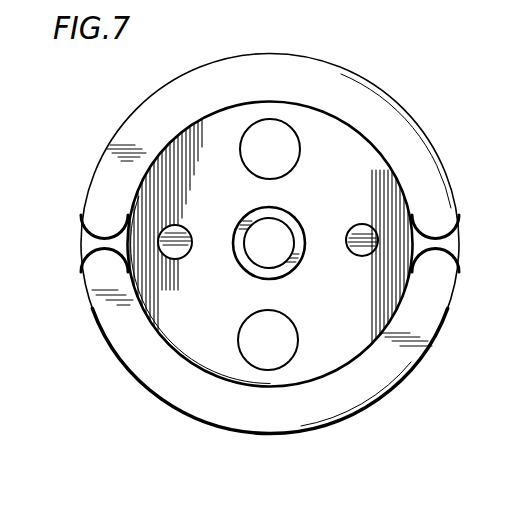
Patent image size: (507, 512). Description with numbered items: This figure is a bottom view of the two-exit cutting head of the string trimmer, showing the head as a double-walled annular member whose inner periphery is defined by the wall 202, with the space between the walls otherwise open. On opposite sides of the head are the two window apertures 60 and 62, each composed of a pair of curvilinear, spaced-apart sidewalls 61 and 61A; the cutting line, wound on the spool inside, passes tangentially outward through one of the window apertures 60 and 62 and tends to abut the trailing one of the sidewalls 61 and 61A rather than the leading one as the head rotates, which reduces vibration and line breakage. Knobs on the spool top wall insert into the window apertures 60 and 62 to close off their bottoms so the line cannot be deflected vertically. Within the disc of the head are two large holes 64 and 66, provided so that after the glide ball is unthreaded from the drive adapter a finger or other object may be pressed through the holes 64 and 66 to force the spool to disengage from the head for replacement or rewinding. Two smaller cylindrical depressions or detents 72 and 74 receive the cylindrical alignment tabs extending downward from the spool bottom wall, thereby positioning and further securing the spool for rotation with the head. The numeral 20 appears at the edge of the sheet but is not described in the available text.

The window aperture 60 is at (84, 244).
The sidewall 61 is at (106, 237).
The sidewall 61A is at (104, 251).
The window aperture 62 is at (454, 243).
The hole 64 is at (269, 123).
The hole 66 is at (255, 363).
The cylindrical depression or detent 72 is at (180, 259).
The cylindrical depression or detent 74 is at (361, 229).
The wall 202 is at (337, 364).
The assembly 20 is at (500, 408).